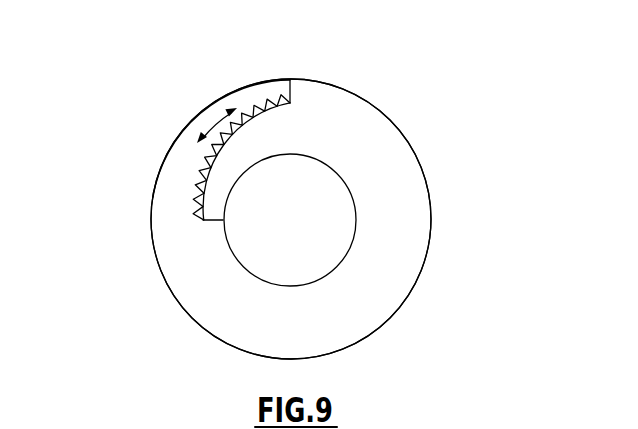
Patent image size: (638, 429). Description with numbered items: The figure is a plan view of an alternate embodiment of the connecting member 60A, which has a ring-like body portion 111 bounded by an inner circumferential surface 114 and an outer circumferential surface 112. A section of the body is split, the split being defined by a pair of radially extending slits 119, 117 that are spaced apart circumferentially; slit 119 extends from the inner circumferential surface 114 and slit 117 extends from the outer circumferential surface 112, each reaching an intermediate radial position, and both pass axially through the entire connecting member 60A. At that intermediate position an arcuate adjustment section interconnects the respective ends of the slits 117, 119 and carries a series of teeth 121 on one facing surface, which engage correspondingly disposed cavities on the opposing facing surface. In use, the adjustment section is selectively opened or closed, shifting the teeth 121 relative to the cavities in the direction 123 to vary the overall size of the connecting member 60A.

The connecting member 60A is at (392, 325).
The ring-like body portion 111 is at (160, 229).
The outer circumferential surface 112 is at (177, 135).
The inner circumferential surface 114 is at (345, 177).
The radially extending slit 117 is at (278, 80).
The radially extending slit 119 is at (212, 222).
The teeth 121 is at (201, 173).
The direction 123 is at (217, 118).